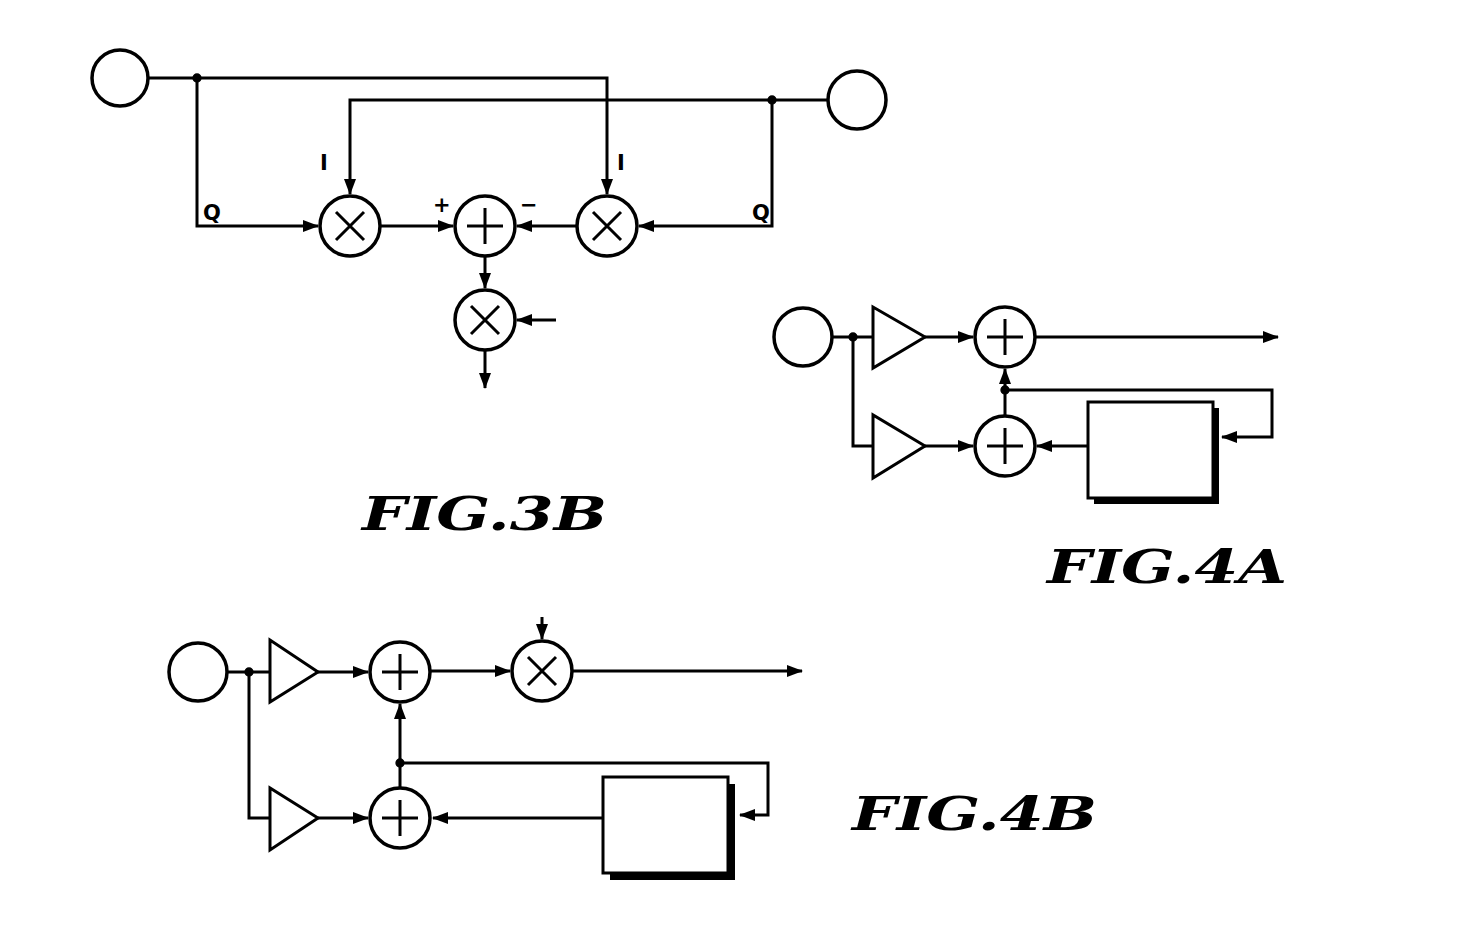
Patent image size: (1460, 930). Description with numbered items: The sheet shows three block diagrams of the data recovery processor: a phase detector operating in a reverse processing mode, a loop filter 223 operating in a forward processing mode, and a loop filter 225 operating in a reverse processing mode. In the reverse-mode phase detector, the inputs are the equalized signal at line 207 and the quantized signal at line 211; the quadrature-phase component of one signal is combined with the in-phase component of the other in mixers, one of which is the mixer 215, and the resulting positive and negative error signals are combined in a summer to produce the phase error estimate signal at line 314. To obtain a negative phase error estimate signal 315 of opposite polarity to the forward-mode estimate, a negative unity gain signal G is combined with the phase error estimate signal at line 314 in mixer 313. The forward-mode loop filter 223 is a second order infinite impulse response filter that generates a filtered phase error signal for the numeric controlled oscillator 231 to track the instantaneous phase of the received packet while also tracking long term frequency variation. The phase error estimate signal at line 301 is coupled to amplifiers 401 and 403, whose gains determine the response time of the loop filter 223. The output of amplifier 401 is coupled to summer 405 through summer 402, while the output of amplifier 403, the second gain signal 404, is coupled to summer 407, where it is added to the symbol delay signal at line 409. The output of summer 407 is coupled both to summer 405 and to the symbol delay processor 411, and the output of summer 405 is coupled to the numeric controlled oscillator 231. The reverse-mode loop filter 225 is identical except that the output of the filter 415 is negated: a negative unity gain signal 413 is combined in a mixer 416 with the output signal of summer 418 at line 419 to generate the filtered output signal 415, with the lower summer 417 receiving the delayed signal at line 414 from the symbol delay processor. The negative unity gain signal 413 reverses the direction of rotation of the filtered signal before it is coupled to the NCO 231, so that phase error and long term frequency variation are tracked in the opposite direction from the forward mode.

In FIG. 3B, the equalized signal line 207 is at (225, 77).
In FIG. 3B, the quantized signal line 211 is at (858, 70).
In FIG. 3B, the multiplier 215 is at (312, 272).
In FIG. 3B, the mixer 313 is at (506, 294).
In FIG. 3B, the phase error estimate signal line 314 is at (484, 272).
In FIG. 3B, the negative phase error estimate signal 315 is at (490, 355).
In FIG. 4B, the negative phase error estimate signal 315 is at (183, 642).
In FIG. 4A, the loop filter 223 is at (1037, 382).
In FIG. 4B, the loop filter 225 is at (383, 604).
In FIG. 4A, the numeric controlled oscillator 231 is at (1344, 343).
In FIG. 4B, the numeric controlled oscillator 231 is at (877, 682).
In FIG. 4A, the phase error estimate signal 301 is at (797, 302).
In FIG. 4A, the amplifier 401 is at (892, 310).
In FIG. 4A, the summer 402 is at (947, 336).
In FIG. 4A, the amplifier 403 is at (888, 420).
In FIG. 4A, the second gain signal 404 is at (945, 450).
In FIG. 4A, the summer 405 is at (1028, 318).
In FIG. 4A, the summer 407 is at (1027, 473).
In FIG. 4A, the symbol delay signal line 409 is at (1053, 448).
In FIG. 4A, the symbol delay processor 411 is at (1222, 458).
In FIG. 4B, the negative unity gain signal 413 is at (560, 615).
In FIG. 4B, the delayed signal 414 is at (539, 818).
In FIG. 4B, the filtered output signal 415 is at (712, 668).
In FIG. 4B, the mixer 416 is at (510, 682).
In FIG. 4B, the summer 417 is at (377, 835).
In FIG. 4B, the summer 418 is at (418, 652).
In FIG. 4B, the summer output signal line 419 is at (460, 671).